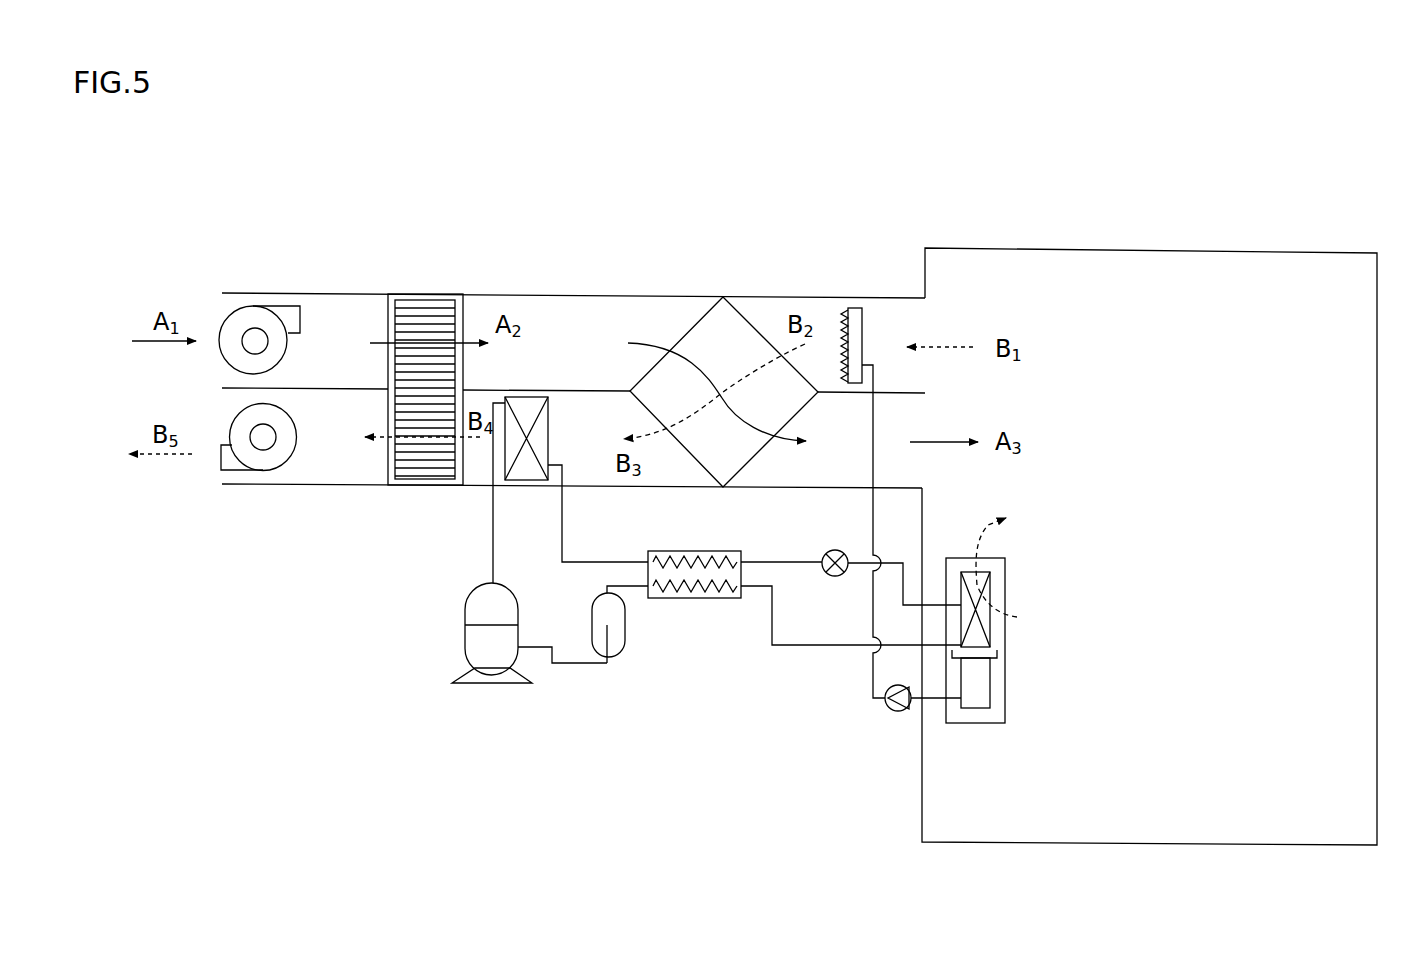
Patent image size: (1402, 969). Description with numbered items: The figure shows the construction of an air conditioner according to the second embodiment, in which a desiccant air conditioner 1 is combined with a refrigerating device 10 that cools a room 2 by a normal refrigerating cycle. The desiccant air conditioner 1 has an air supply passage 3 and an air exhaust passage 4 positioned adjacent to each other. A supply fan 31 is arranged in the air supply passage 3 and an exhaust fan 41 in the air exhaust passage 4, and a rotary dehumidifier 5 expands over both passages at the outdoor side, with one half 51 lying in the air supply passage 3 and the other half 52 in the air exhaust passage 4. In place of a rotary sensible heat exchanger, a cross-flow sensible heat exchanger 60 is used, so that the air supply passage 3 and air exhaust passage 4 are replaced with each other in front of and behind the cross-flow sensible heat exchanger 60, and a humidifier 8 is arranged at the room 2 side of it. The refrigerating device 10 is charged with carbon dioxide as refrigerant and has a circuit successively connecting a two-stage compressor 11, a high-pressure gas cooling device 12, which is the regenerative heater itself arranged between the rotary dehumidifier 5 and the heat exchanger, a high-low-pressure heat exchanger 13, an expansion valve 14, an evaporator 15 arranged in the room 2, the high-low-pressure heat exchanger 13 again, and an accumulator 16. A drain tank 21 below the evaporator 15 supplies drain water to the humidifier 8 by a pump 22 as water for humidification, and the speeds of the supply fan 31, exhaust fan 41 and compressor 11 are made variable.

The desiccant air conditioner 1 is at (553, 282).
The room 2 is at (1007, 250).
The air supply passage 3 is at (358, 293).
The air exhaust passage 4 is at (820, 297).
The rotary dehumidifier 5 is at (419, 294).
The humidifier 8 is at (865, 325).
The refrigerating device 10 is at (580, 692).
The two-stage compressor 11 is at (457, 642).
The high-pressure gas cooling device 12 is at (533, 488).
The high-low-pressure heat exchanger 13 is at (722, 598).
The expansion valve 14 is at (835, 550).
The evaporator 15 is at (990, 590).
The accumulator 16 is at (627, 625).
The drain tank 21 is at (990, 690).
The pump 22 is at (896, 712).
The supply fan 31 is at (255, 306).
The exhaust fan 41 is at (252, 470).
The one half of rotary dehumidifier 51 is at (455, 323).
The other half of rotary dehumidifier 52 is at (393, 458).
The cross-flow sensible heat exchanger 60 is at (705, 313).